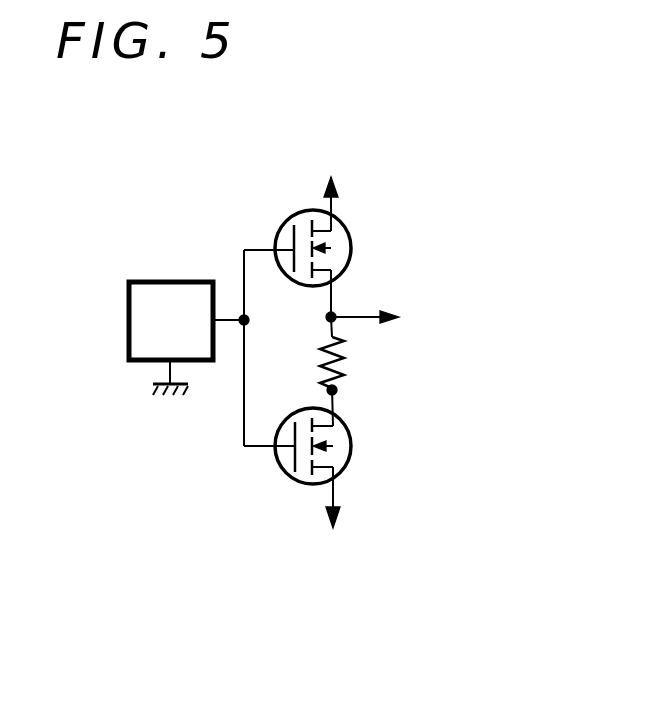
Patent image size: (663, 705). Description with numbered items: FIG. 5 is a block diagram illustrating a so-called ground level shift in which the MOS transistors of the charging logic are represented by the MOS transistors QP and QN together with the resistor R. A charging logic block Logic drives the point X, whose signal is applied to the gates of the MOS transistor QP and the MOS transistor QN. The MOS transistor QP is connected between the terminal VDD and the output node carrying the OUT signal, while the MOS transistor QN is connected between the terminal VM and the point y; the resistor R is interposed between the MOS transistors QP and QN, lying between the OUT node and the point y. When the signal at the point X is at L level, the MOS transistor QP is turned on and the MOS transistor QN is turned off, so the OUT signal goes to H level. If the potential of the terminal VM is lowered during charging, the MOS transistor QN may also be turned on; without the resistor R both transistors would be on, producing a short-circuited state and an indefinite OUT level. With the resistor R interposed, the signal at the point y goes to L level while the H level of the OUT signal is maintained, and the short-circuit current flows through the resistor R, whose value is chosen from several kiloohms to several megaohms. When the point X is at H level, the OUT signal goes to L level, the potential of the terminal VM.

The charging logic Logic is at (186, 338).
The point x X is at (257, 348).
The MOS transistor QP is at (333, 247).
The MOS transistor QN is at (340, 468).
The resistor R is at (321, 352).
The point y is at (341, 403).
The OUT signal OUT is at (395, 319).
The terminal VDD is at (332, 162).
The terminal VM is at (340, 554).